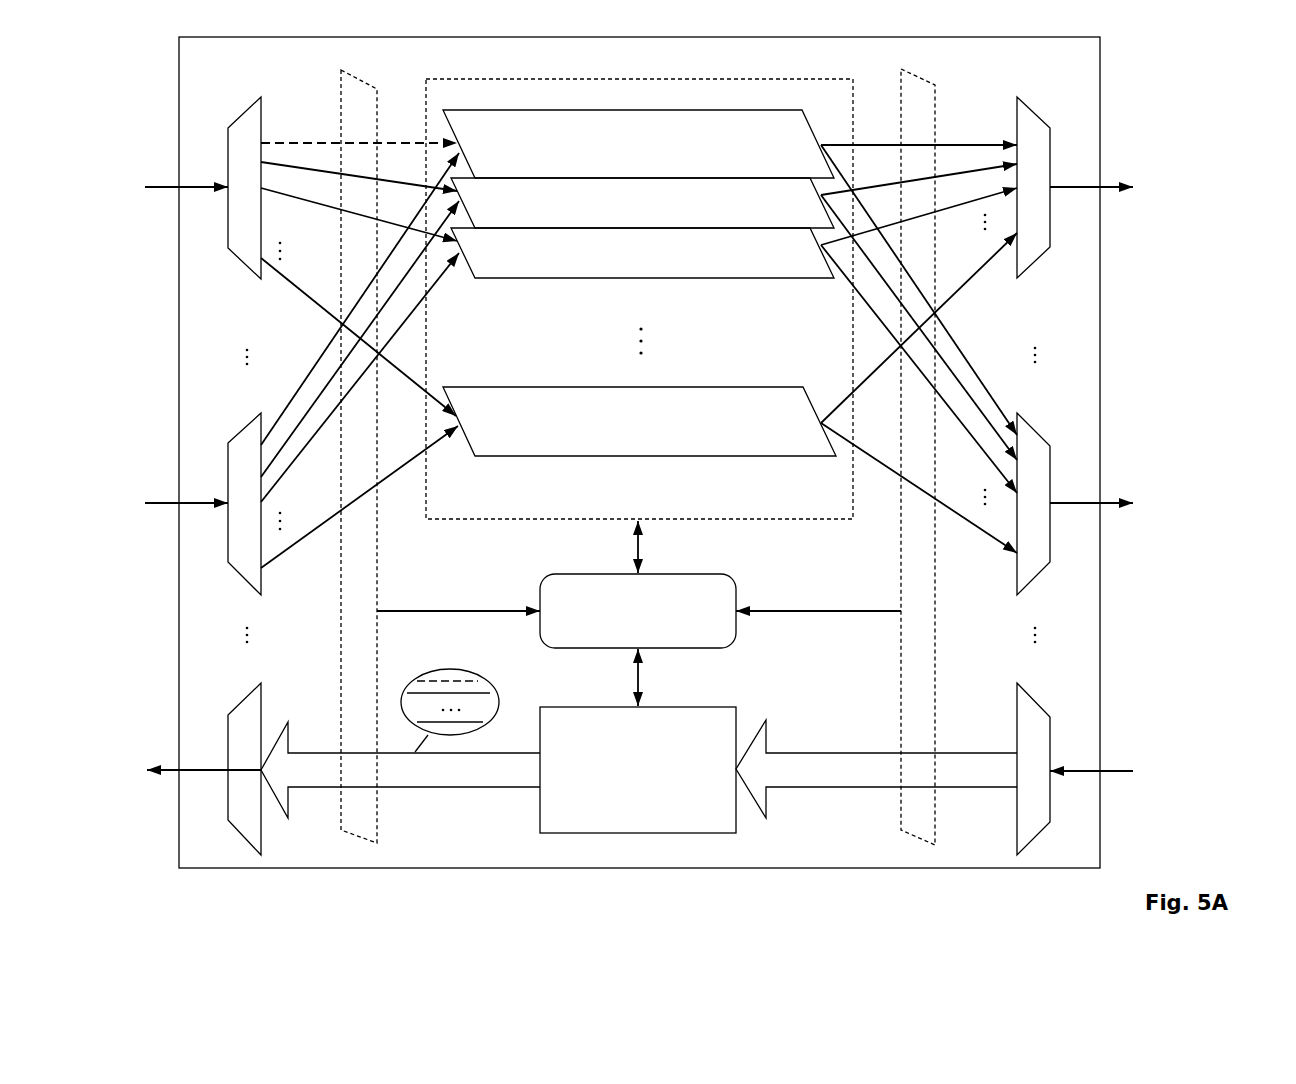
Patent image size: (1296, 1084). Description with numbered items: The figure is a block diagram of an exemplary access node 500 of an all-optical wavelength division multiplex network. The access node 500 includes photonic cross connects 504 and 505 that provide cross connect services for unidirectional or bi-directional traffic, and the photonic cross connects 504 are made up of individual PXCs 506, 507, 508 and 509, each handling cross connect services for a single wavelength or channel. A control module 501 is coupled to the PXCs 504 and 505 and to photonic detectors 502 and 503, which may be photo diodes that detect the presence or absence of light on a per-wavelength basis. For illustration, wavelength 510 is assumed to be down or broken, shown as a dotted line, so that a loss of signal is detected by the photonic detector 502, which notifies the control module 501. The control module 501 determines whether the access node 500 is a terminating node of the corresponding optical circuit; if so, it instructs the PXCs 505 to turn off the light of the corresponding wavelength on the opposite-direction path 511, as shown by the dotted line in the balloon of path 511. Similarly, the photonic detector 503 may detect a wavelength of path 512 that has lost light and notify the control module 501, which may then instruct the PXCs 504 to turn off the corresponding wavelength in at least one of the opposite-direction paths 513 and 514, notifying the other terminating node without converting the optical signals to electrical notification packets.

The access node 500 is at (622, 452).
The control module 501 is at (638, 613).
The photonic detector 502 is at (380, 563).
The photonic detector 503 is at (935, 635).
The photonic cross connects (PXCs) 504 is at (639, 299).
The photonic cross connects (PXCs) 505 is at (638, 770).
The individual PXC 506 is at (638, 144).
The individual PXC 507 is at (642, 203).
The individual PXC 508 is at (642, 253).
The individual PXC 509 is at (639, 421).
The wavelength 510 is at (292, 140).
The path 511 is at (492, 752).
The path 512 is at (939, 769).
The path 513 is at (1081, 187).
The path 514 is at (1081, 504).